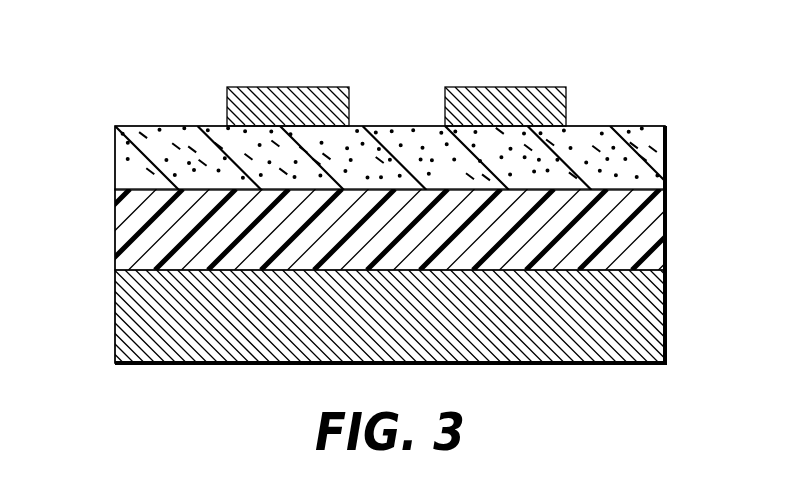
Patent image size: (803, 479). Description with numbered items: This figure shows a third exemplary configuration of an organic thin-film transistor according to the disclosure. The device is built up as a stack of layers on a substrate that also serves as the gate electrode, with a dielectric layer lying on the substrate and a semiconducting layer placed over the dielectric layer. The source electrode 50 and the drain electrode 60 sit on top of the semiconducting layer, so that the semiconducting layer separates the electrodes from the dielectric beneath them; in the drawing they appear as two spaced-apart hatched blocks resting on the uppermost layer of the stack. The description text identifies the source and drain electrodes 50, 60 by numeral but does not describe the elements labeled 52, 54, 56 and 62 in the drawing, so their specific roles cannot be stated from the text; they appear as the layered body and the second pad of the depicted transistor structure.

The source electrode 50 is at (143, 41).
The top dielectric/passivation layer 52 is at (655, 158).
The multilayer stack 54 is at (105, 190).
The substrate 56 is at (657, 318).
The drain electrode 60 is at (288, 87).
The second contact pad 62 is at (505, 87).